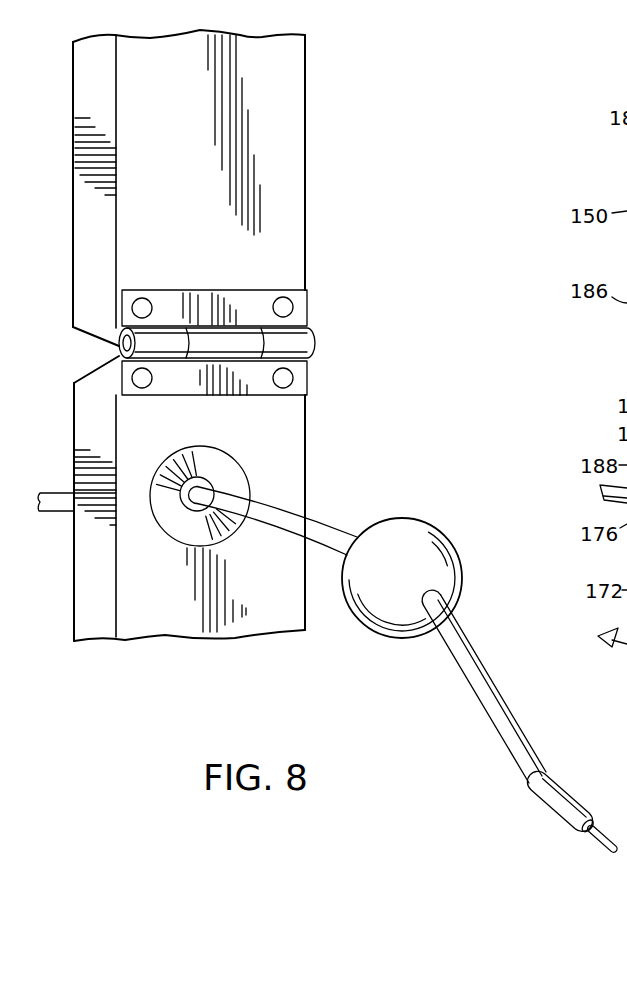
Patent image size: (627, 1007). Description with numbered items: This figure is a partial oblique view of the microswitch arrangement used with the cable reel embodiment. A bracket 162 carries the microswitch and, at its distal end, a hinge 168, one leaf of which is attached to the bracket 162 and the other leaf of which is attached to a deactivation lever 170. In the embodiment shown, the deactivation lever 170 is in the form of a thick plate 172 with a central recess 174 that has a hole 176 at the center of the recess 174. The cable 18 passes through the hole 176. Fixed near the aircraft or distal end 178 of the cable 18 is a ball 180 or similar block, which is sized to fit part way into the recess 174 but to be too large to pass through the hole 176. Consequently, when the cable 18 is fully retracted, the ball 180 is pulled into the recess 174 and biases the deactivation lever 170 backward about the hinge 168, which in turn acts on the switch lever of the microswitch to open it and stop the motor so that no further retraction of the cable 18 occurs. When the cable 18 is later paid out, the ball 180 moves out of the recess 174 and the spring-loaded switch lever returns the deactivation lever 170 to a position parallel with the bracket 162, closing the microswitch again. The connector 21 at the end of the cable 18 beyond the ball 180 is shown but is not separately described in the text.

The bracket 162 is at (305, 162).
The hinge 168 is at (307, 325).
The deactivation lever 170 is at (305, 600).
The thick plate 172 is at (157, 613).
The central recess 174 is at (212, 537).
The hole 176 is at (205, 478).
The cable 18 is at (302, 520).
The ball 180 is at (428, 533).
The aircraft (distal) end 178 is at (537, 757).
The connector 21 is at (547, 807).